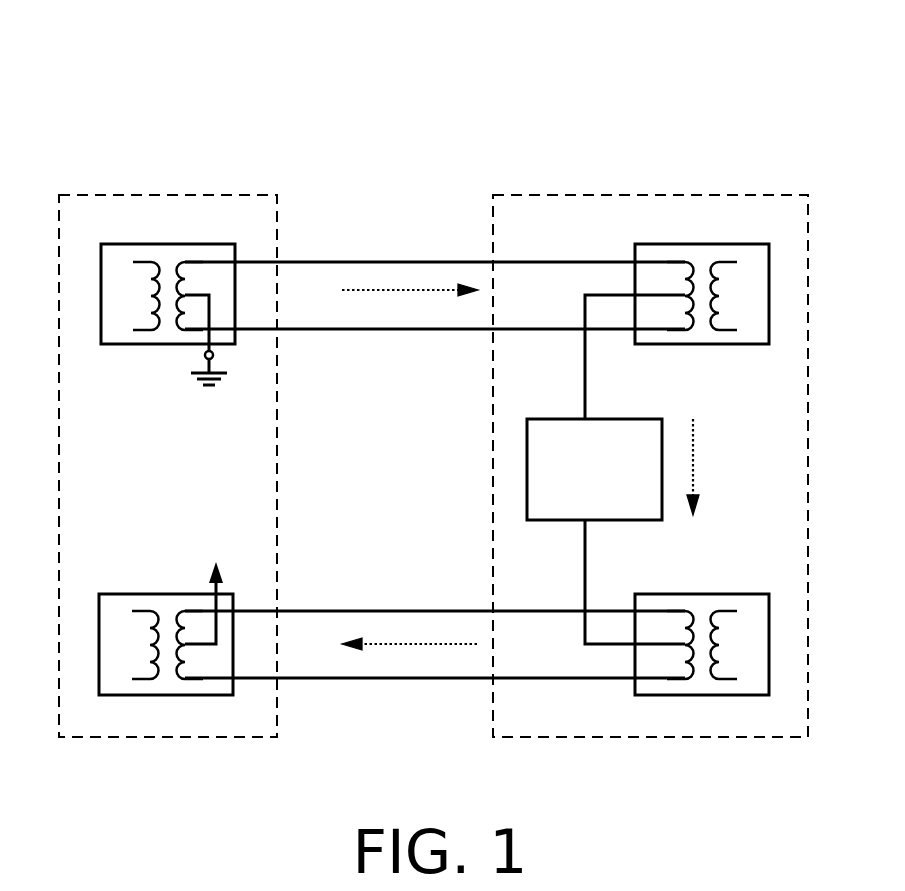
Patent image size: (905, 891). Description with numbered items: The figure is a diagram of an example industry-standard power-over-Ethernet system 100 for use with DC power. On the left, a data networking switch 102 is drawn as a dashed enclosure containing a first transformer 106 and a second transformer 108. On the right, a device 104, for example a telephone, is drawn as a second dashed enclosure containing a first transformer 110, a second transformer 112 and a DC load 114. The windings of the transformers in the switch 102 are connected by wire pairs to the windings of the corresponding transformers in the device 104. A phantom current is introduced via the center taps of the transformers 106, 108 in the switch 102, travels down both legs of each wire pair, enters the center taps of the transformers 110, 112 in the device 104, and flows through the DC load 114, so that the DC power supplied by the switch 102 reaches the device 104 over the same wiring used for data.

The POE system 100 is at (95, 62).
The data networking switch 102 is at (168, 431).
The device 104 is at (650, 431).
The first transformer 106 is at (164, 345).
The second transformer 108 is at (166, 592).
The first transformer 110 is at (683, 335).
The second transformer 112 is at (683, 592).
The DC load 114 is at (594, 469).